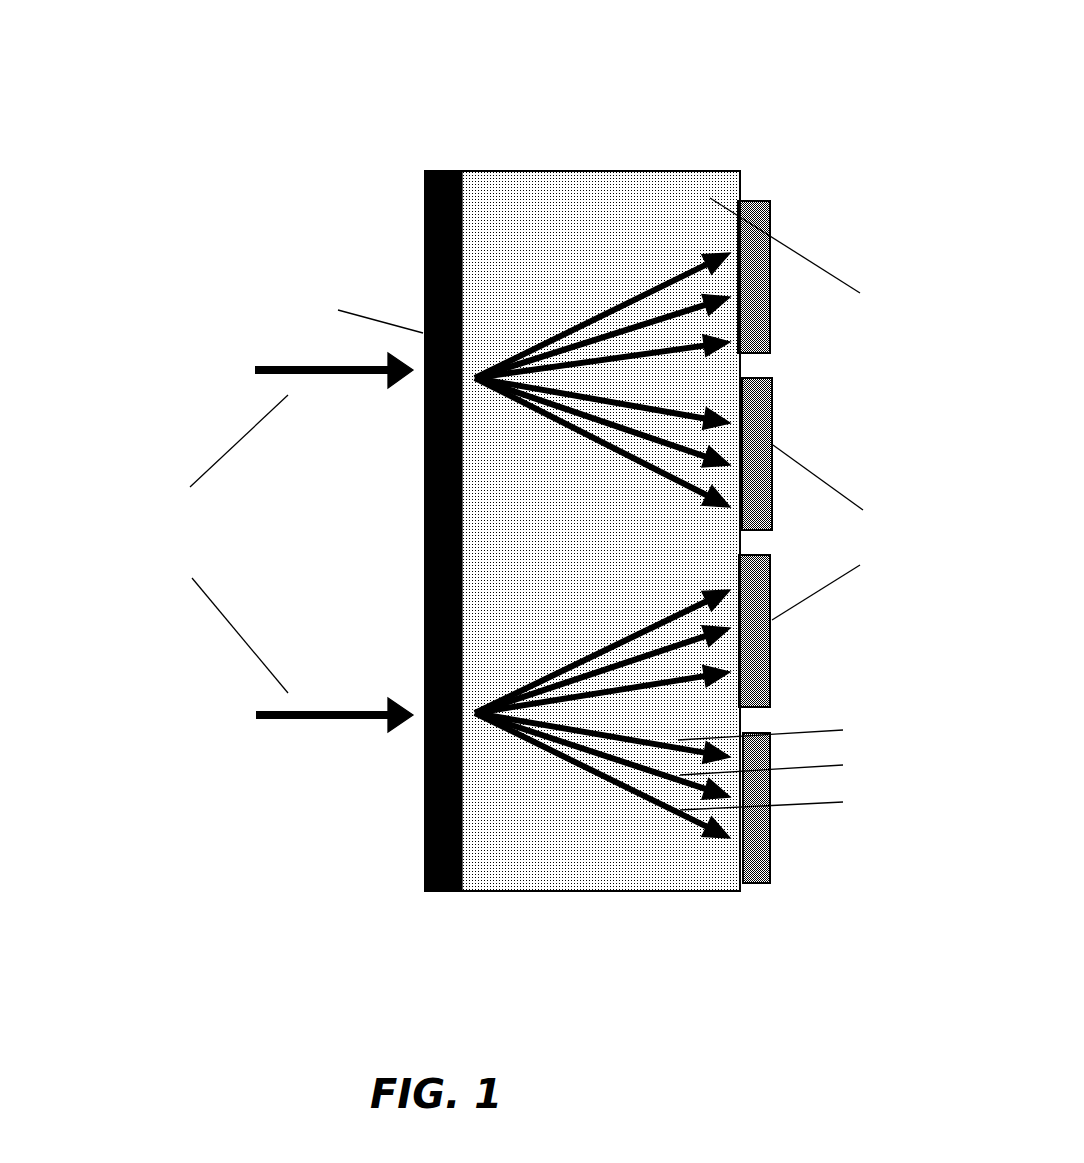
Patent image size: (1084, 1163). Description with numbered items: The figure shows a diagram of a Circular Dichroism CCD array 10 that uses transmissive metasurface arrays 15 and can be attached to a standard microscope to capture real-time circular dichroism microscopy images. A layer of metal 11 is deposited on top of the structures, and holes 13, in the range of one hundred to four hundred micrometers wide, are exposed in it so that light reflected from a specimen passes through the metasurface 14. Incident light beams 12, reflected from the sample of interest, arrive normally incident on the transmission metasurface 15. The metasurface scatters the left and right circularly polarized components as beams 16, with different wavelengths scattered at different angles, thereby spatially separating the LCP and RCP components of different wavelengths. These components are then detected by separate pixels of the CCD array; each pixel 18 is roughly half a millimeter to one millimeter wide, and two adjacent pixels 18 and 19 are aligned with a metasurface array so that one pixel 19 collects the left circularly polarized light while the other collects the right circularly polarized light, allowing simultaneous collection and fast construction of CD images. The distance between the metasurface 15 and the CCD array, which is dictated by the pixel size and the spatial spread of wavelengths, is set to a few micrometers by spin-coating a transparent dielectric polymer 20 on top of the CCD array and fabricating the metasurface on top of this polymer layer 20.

The Circular Dichroism CCD array 10 is at (604, 78).
The layer of metal 11 is at (396, 531).
The incident light beams 12 is at (323, 717).
The holes 13 is at (400, 553).
The metasurface 14 is at (422, 592).
The transmissive metasurface array 15 is at (422, 668).
The scattered beams 16 is at (585, 653).
The CCD pixel 18 is at (770, 868).
The CCD pixel 19 is at (770, 643).
The transparent dielectric polymer layer 20 is at (635, 200).